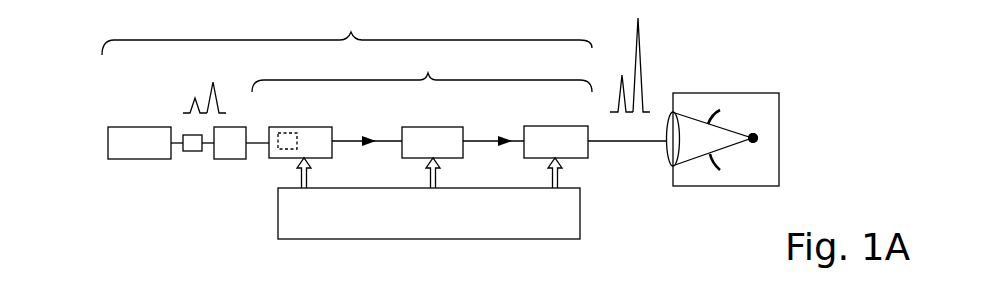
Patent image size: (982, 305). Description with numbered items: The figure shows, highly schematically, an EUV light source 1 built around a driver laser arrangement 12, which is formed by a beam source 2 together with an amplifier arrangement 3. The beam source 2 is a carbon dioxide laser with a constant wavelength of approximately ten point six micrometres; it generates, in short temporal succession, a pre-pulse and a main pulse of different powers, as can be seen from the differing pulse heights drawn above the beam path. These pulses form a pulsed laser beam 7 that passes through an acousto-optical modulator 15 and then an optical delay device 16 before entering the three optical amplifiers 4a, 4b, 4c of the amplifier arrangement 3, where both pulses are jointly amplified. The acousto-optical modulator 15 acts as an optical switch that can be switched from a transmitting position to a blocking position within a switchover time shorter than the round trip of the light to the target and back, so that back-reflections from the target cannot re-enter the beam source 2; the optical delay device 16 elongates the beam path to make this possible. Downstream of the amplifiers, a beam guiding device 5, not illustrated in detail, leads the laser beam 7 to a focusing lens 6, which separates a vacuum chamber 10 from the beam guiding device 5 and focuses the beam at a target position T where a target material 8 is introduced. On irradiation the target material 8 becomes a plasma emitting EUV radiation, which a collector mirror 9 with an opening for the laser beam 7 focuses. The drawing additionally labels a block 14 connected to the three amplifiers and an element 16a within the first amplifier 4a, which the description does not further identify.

The EUV light source 1 is at (119, 104).
The beam source 2 is at (153, 140).
The amplifier arrangement 3 is at (422, 72).
The first optical amplifier 4a is at (310, 128).
The second optical amplifier 4b is at (437, 140).
The third optical amplifier 4c is at (565, 140).
The beam guiding device 5 is at (612, 143).
The focusing lens 6 is at (672, 152).
The laser beam 7 is at (694, 133).
The target material 8 is at (757, 136).
The collector mirror 9 is at (711, 170).
The vacuum chamber 10 is at (782, 145).
The driver laser arrangement 12 is at (347, 31).
The control unit 14 is at (464, 225).
The acousto-optical modulator 15 is at (193, 152).
The optical delay device 16 is at (228, 152).
The amplifier control element 16a is at (287, 150).
The target position T is at (751, 120).